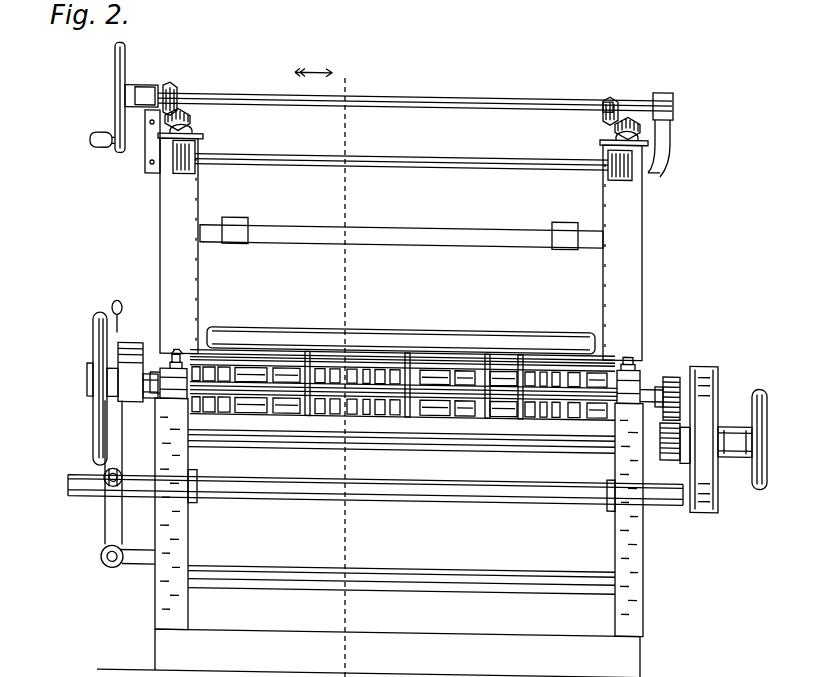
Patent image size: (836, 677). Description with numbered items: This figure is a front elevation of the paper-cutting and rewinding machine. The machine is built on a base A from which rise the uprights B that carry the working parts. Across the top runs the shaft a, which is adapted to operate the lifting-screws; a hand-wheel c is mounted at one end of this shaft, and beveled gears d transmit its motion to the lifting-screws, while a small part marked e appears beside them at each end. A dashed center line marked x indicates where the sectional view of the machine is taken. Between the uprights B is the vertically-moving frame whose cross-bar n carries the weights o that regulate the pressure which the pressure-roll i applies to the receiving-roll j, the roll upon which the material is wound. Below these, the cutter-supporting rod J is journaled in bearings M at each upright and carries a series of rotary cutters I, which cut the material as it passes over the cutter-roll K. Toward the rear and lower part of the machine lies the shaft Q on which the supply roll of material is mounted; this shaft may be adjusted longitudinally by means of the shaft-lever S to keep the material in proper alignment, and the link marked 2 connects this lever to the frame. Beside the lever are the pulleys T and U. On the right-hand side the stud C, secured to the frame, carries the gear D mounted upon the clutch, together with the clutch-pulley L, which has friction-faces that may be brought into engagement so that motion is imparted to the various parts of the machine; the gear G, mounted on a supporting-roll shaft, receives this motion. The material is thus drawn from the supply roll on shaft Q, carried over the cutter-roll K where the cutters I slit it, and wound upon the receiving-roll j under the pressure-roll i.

The base A is at (368, 652).
The uprights B is at (396, 235).
The stud C is at (650, 432).
The shaft Q is at (375, 490).
The cutter-roll K is at (312, 414).
The weights o is at (455, 590).
The cross-bar n is at (401, 238).
The shaft a is at (415, 128).
The hand-wheel c is at (122, 74).
The beveled gears d is at (177, 92).
The bevel gear e is at (190, 119).
The line X X x is at (325, 370).
The pressure-roll i is at (386, 336).
The receiving-roll j is at (426, 360).
The cutter-supporting rod J is at (437, 416).
The rotary cutters I is at (311, 352).
The bearings M is at (181, 404).
The gear G is at (672, 374).
The gear D is at (673, 455).
The clutch-pulley L is at (728, 439).
The shaft-lever S is at (120, 330).
The pulley T is at (140, 352).
The pulley U is at (132, 383).
The lever link 2 is at (128, 492).